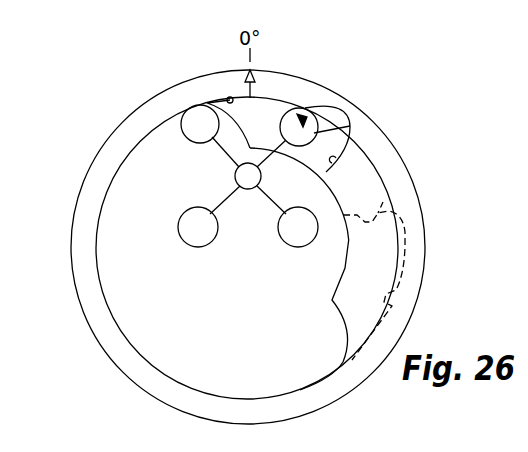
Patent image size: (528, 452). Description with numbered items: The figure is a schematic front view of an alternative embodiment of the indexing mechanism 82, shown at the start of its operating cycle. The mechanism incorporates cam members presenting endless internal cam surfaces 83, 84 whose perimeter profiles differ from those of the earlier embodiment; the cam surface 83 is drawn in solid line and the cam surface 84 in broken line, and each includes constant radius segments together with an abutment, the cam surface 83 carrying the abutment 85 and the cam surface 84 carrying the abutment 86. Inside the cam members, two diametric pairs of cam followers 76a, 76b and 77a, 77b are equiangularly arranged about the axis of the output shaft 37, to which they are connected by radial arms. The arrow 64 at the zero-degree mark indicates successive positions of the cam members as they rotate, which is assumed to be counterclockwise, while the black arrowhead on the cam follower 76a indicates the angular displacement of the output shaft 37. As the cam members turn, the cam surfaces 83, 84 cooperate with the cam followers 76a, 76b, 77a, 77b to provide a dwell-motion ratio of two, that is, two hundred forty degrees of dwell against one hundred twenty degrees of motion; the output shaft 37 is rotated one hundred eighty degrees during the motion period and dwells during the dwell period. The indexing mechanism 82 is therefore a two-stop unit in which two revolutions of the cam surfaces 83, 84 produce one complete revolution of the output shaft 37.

The indexing mechanism 82 is at (347, 86).
The cam surface 83 is at (229, 96).
The arrow 64 is at (251, 90).
The output shaft 37 is at (235, 175).
The cam follower 77a is at (196, 143).
The cam follower 76a is at (350, 121).
The abutment 85 is at (338, 158).
The abutment 86 is at (383, 196).
The cam follower 76b is at (201, 247).
The cam follower 77b is at (294, 247).
The cam surface 84 is at (398, 305).